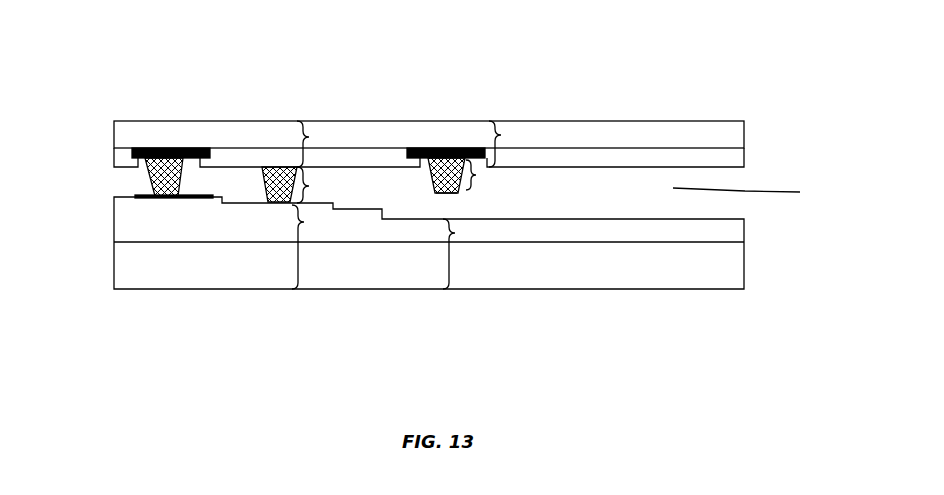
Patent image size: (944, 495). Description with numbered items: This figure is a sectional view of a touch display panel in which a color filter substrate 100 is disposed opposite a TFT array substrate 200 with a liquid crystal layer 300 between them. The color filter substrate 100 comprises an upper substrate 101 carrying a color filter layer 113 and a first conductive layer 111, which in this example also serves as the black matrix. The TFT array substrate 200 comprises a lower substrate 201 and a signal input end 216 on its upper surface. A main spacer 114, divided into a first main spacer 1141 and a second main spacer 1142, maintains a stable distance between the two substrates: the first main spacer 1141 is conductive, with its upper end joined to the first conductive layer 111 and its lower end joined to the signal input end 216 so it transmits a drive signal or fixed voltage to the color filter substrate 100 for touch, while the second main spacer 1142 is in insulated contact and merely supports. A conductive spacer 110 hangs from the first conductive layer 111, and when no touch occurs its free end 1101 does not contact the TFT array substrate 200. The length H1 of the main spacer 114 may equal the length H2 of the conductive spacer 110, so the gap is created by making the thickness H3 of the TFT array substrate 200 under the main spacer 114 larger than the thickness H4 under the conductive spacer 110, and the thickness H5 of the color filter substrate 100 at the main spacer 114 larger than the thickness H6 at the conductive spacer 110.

The color filter substrate 100 is at (467, 118).
The upper substrate 101 is at (670, 137).
The color filter layer 113 is at (737, 155).
The first conductive layer 111 is at (130, 150).
The main spacer 114 is at (217, 118).
The first main spacer 1141 is at (157, 148).
The second main spacer 1142 is at (271, 142).
The conductive spacer 110 is at (432, 172).
The free end 1101 is at (450, 192).
The liquid crystal layer 300 is at (800, 192).
The TFT array substrate 200 is at (450, 258).
The lower substrate 201 is at (643, 277).
The signal input end 216 is at (137, 196).
The length of the main spacer H1 is at (319, 185).
The length of the conductive spacer H2 is at (488, 175).
The thickness of the TFT array substrate at the main spacer H3 is at (316, 247).
The thickness of the TFT array substrate at the conductive spacer H4 is at (464, 254).
The thickness of the color filter substrate at the main spacer H5 is at (319, 144).
The thickness of the color filter substrate at the conductive spacer H6 is at (510, 144).